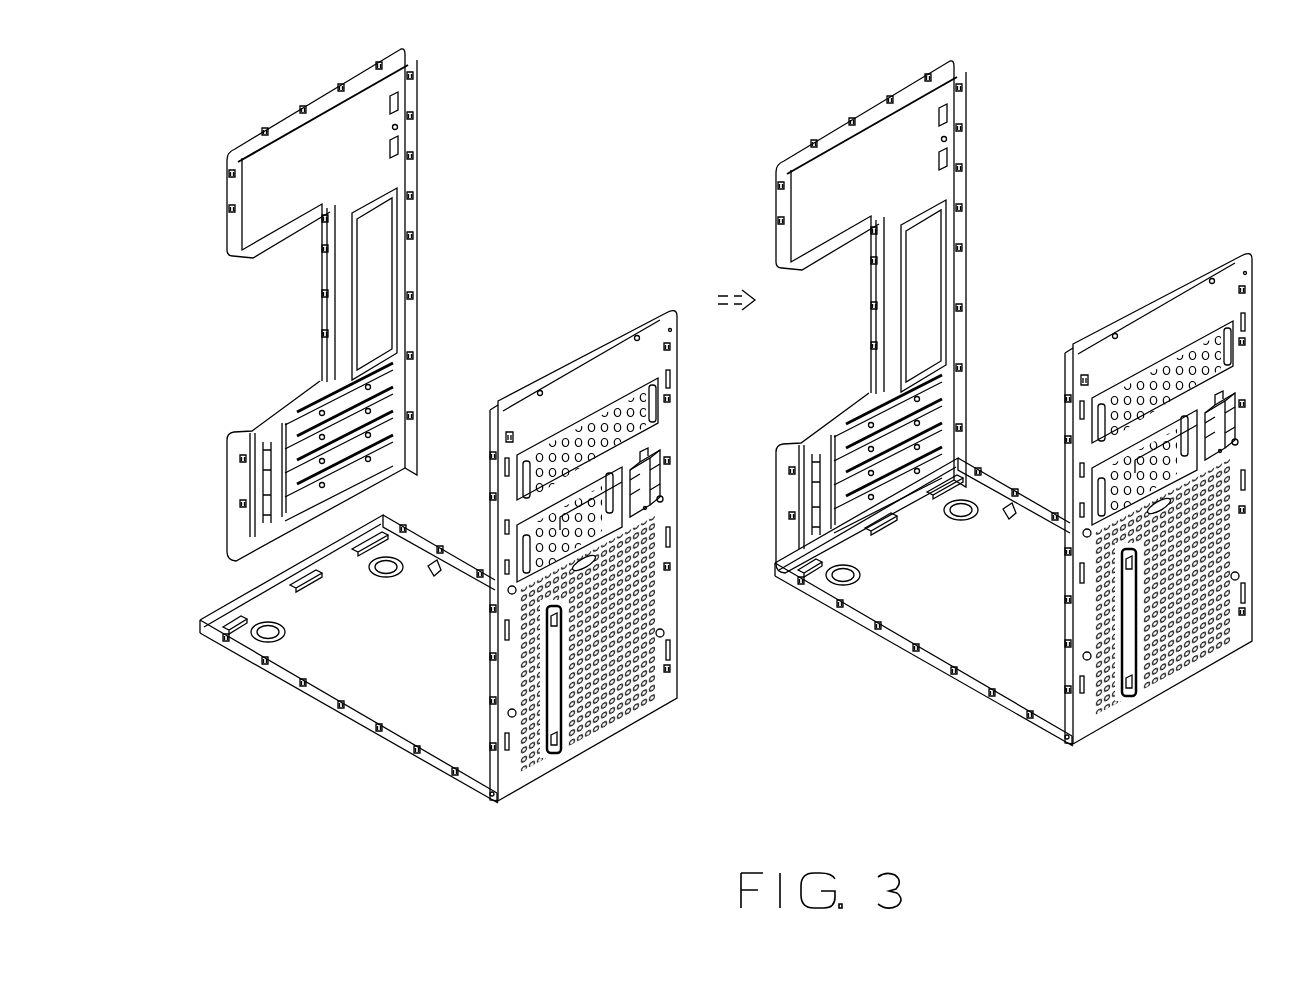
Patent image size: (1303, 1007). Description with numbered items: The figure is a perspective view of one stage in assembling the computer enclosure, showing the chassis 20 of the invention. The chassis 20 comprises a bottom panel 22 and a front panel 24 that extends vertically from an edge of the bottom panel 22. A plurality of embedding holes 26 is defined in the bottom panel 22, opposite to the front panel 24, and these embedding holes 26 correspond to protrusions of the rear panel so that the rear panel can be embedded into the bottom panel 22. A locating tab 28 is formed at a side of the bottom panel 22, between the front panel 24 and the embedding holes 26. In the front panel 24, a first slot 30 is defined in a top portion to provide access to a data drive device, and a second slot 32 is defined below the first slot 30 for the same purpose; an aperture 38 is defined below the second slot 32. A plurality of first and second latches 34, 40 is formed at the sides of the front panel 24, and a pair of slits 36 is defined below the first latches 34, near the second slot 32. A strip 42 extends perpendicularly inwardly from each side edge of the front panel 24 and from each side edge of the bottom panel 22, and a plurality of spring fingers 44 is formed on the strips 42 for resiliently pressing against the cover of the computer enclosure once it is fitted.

The chassis 20 is at (571, 308).
The bottom panel 22 is at (418, 705).
The front panel 24 is at (670, 440).
The embedding holes 26 is at (405, 530).
The locating tab 28 is at (433, 575).
The first slot 30 is at (630, 365).
The second slot 32 is at (588, 493).
The first latches 34 is at (503, 443).
The slits 36 is at (494, 608).
The aperture 38 is at (572, 552).
The second latches 40 is at (672, 673).
The strip 42 is at (325, 698).
The spring fingers 44 is at (262, 658).